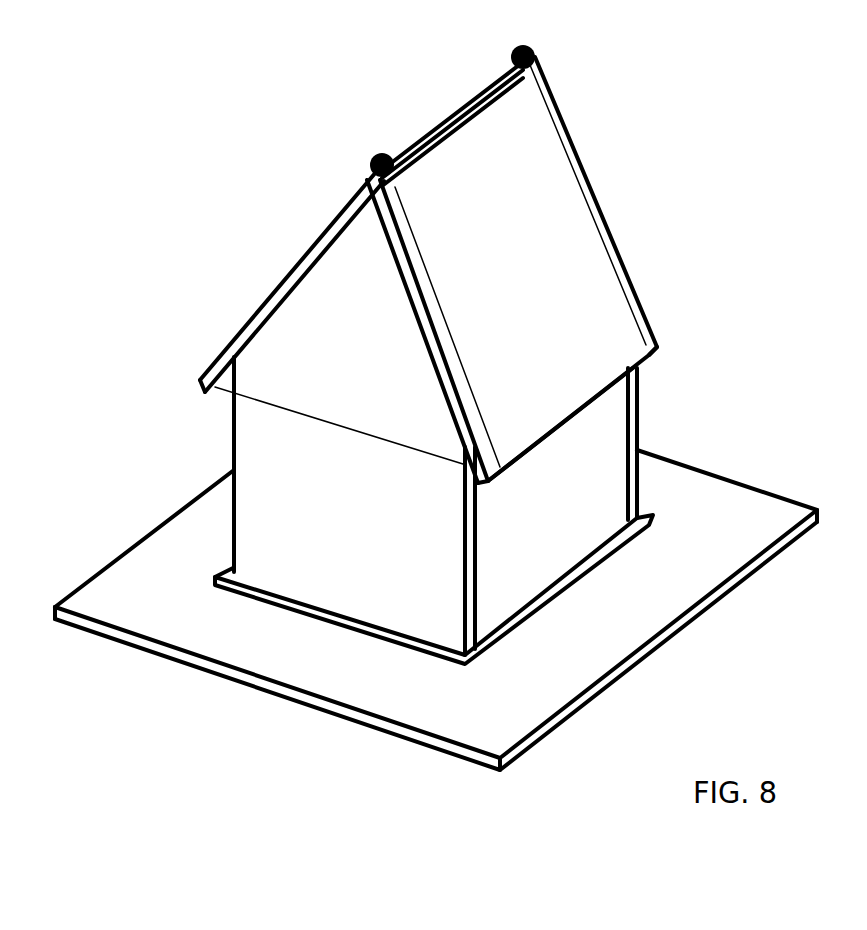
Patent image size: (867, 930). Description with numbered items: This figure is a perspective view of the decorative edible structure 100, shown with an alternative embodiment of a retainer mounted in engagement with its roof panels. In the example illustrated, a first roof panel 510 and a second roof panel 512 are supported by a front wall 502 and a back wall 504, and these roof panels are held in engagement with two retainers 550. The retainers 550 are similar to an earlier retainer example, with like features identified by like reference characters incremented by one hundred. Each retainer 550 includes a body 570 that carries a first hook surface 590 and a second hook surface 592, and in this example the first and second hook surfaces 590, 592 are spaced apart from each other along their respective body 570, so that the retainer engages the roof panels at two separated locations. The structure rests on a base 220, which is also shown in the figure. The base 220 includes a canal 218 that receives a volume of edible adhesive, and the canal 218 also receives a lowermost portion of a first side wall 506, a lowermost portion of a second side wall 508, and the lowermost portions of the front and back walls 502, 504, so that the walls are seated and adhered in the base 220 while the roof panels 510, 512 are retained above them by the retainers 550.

The enclosure assembly 100 is at (660, 78).
The canal 218 is at (597, 639).
The base 220 is at (569, 556).
The front wall 502 is at (369, 545).
The back wall 504 is at (638, 401).
The first side wall 506 is at (581, 545).
The second side wall 508 is at (232, 516).
The first roof panel 510 is at (620, 243).
The second roof panel 512 is at (293, 254).
The retainer 550 is at (400, 193).
The body 570 is at (576, 178).
The first hook surface 590 is at (650, 358).
The second hook surface 592 is at (217, 388).